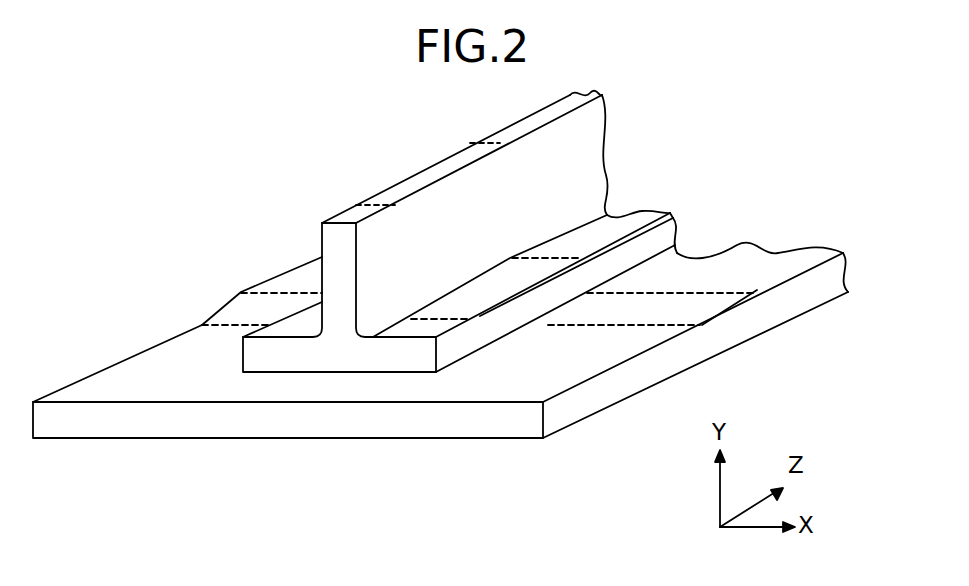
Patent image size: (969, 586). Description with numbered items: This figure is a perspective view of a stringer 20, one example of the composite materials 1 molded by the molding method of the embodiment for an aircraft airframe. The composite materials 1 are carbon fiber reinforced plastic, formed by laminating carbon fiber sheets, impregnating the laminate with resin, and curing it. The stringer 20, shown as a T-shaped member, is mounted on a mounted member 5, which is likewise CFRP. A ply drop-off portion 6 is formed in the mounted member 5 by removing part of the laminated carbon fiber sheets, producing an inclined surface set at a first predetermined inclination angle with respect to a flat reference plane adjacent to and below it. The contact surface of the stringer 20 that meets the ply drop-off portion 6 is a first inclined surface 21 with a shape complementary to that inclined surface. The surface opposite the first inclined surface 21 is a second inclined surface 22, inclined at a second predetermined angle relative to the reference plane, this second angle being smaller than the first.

The stringer 20 is at (425, 231).
The composite materials 1 is at (432, 163).
The mounted member 5 is at (582, 420).
The ply drop-off portion 6 is at (673, 310).
The first inclined surface 21 is at (577, 292).
The second inclined surface 22 is at (507, 278).